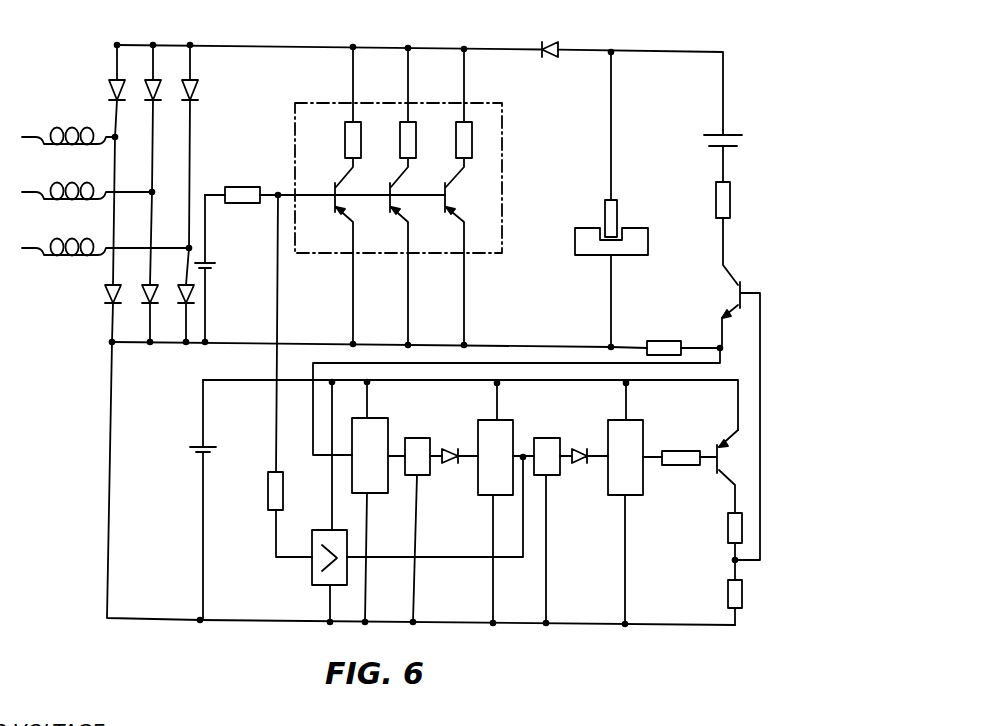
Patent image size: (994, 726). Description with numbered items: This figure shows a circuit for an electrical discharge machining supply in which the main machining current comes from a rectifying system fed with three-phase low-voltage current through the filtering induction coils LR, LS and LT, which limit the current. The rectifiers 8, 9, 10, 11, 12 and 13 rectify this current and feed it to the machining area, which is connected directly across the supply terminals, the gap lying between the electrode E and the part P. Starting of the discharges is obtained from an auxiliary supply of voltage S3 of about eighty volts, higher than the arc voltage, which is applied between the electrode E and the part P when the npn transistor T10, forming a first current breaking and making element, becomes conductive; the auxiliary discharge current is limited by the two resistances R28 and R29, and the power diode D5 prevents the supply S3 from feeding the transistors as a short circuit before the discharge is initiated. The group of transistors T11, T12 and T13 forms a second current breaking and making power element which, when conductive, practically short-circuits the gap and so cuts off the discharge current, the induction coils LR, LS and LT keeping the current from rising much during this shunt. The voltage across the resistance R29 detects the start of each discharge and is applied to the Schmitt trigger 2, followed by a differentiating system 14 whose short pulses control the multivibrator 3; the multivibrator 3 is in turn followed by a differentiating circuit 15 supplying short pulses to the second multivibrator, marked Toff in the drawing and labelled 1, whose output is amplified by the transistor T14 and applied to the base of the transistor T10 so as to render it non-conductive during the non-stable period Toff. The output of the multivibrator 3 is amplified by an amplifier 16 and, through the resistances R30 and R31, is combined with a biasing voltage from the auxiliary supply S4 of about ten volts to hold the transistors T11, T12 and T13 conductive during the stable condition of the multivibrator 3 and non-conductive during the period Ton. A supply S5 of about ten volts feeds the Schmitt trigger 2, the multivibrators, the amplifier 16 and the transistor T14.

The rectifier 8 is at (110, 86).
The rectifier 9 is at (146, 88).
The rectifier 10 is at (197, 90).
The rectifier 11 is at (106, 296).
The rectifier 12 is at (143, 296).
The rectifier 13 is at (179, 294).
The filtering induction coil LR is at (68, 122).
The filtering induction coil LS is at (87, 178).
The filtering induction coil LT is at (105, 234).
The resistance R31 is at (240, 187).
The auxiliary supply S4 is at (216, 266).
The transistor T11 is at (333, 188).
The transistor T12 is at (390, 209).
The transistor T13 is at (445, 209).
The power diode D5 is at (549, 44).
The electrode E is at (618, 214).
The part P is at (649, 246).
The auxiliary supply of voltage S3 is at (704, 137).
The resistance R28 is at (731, 192).
The npn transistor T10 is at (742, 283).
The resistance R29 is at (660, 336).
The supply S5 is at (190, 448).
The resistance R30 is at (266, 500).
The amplifier 16 is at (317, 585).
The Schmitt trigger 2 is at (378, 502).
The differentiating system 14 is at (412, 446).
The multivibrator 3 is at (495, 420).
The differentiating circuit 15 is at (543, 446).
The off-timer Toff 1 is at (634, 421).
The transistor T14 is at (724, 478).